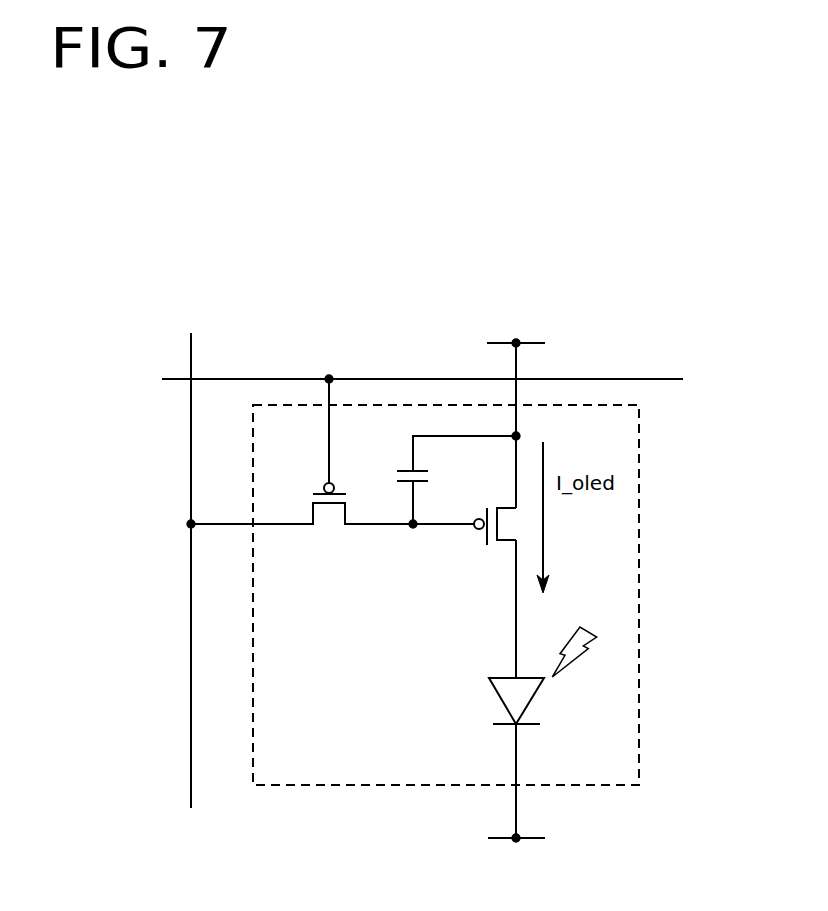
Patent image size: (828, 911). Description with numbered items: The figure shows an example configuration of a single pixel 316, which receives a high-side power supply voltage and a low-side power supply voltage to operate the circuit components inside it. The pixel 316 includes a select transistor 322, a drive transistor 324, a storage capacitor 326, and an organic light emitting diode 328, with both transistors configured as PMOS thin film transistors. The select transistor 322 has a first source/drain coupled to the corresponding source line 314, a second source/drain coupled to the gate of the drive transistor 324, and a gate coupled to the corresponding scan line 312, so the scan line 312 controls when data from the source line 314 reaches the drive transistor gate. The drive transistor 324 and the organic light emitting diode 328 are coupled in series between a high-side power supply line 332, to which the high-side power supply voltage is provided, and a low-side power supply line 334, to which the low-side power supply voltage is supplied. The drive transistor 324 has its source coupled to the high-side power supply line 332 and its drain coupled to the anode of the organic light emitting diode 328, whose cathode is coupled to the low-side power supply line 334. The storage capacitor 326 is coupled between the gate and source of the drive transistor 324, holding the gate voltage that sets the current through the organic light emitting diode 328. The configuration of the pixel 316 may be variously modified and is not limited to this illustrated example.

The scan line 312 is at (262, 379).
The source line 314 is at (190, 472).
The pixel 316 is at (641, 473).
The select transistor 322 is at (333, 522).
The drive transistor 324 is at (482, 546).
The storage capacitor 326 is at (399, 470).
The organic light emitting diode 328 is at (492, 676).
The high-side power supply line 332 is at (533, 343).
The low-side power supply line 334 is at (538, 839).